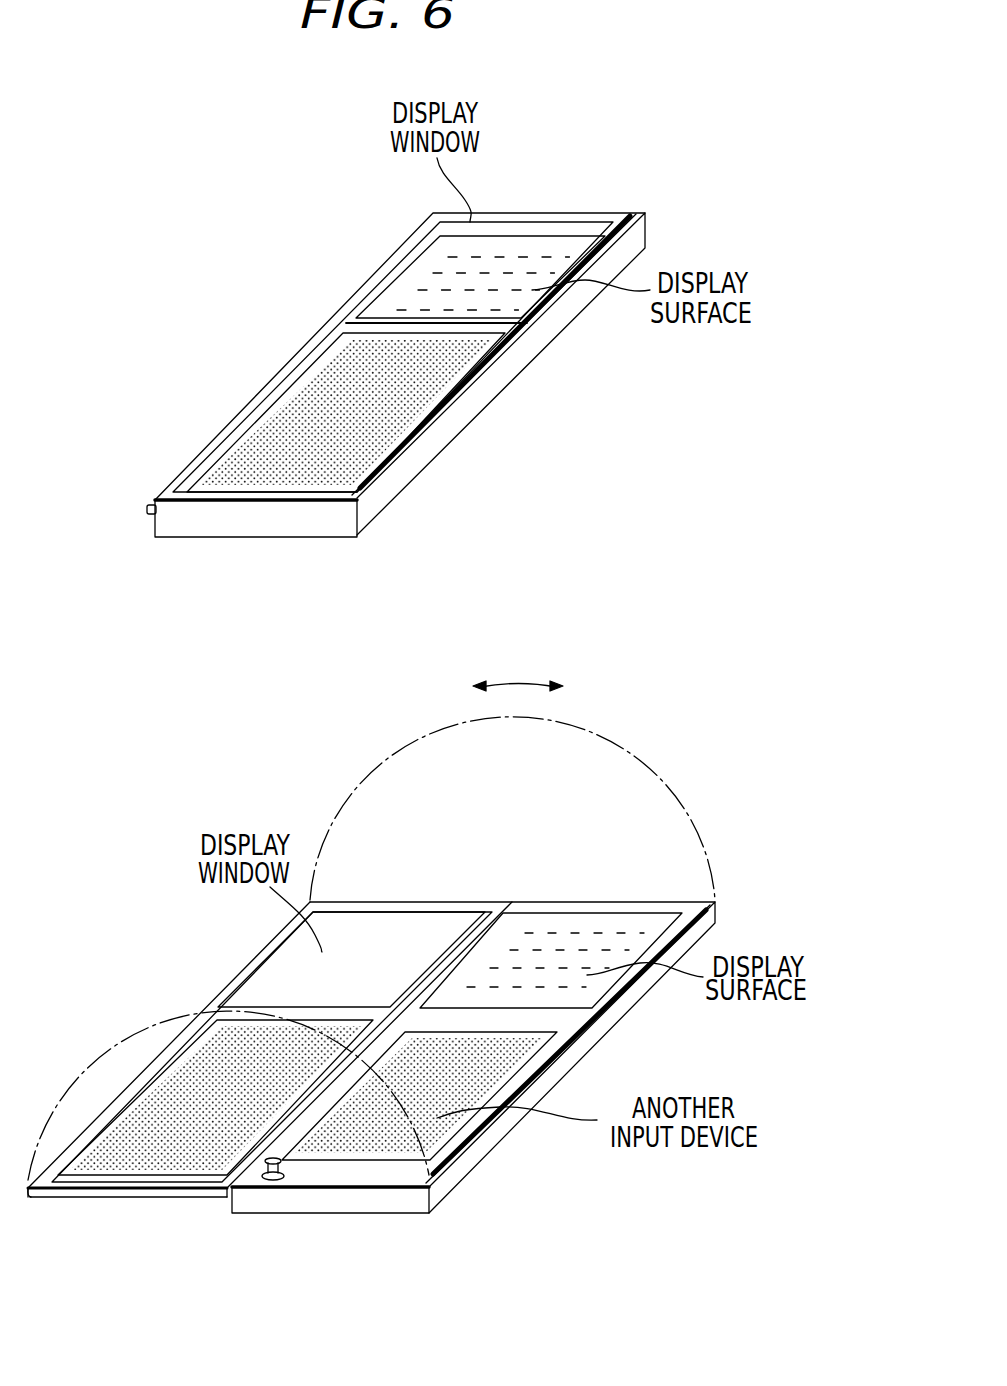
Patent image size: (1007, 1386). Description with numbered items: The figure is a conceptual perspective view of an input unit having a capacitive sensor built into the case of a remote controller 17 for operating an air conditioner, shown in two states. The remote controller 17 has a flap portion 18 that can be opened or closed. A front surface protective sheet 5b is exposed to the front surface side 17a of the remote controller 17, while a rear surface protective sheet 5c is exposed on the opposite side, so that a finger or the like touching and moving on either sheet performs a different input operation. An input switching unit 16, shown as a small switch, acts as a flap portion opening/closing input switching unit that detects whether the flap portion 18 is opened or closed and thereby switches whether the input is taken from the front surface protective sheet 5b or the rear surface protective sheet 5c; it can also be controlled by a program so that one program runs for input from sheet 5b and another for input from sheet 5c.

The remote controller 17 is at (588, 191).
The flap portion 18 is at (628, 213).
The front surface protective sheet 5b is at (308, 402).
The rear surface protective sheet 5c is at (175, 1107).
The front surface side 17a is at (178, 493).
The input switching unit 16 is at (283, 1178).